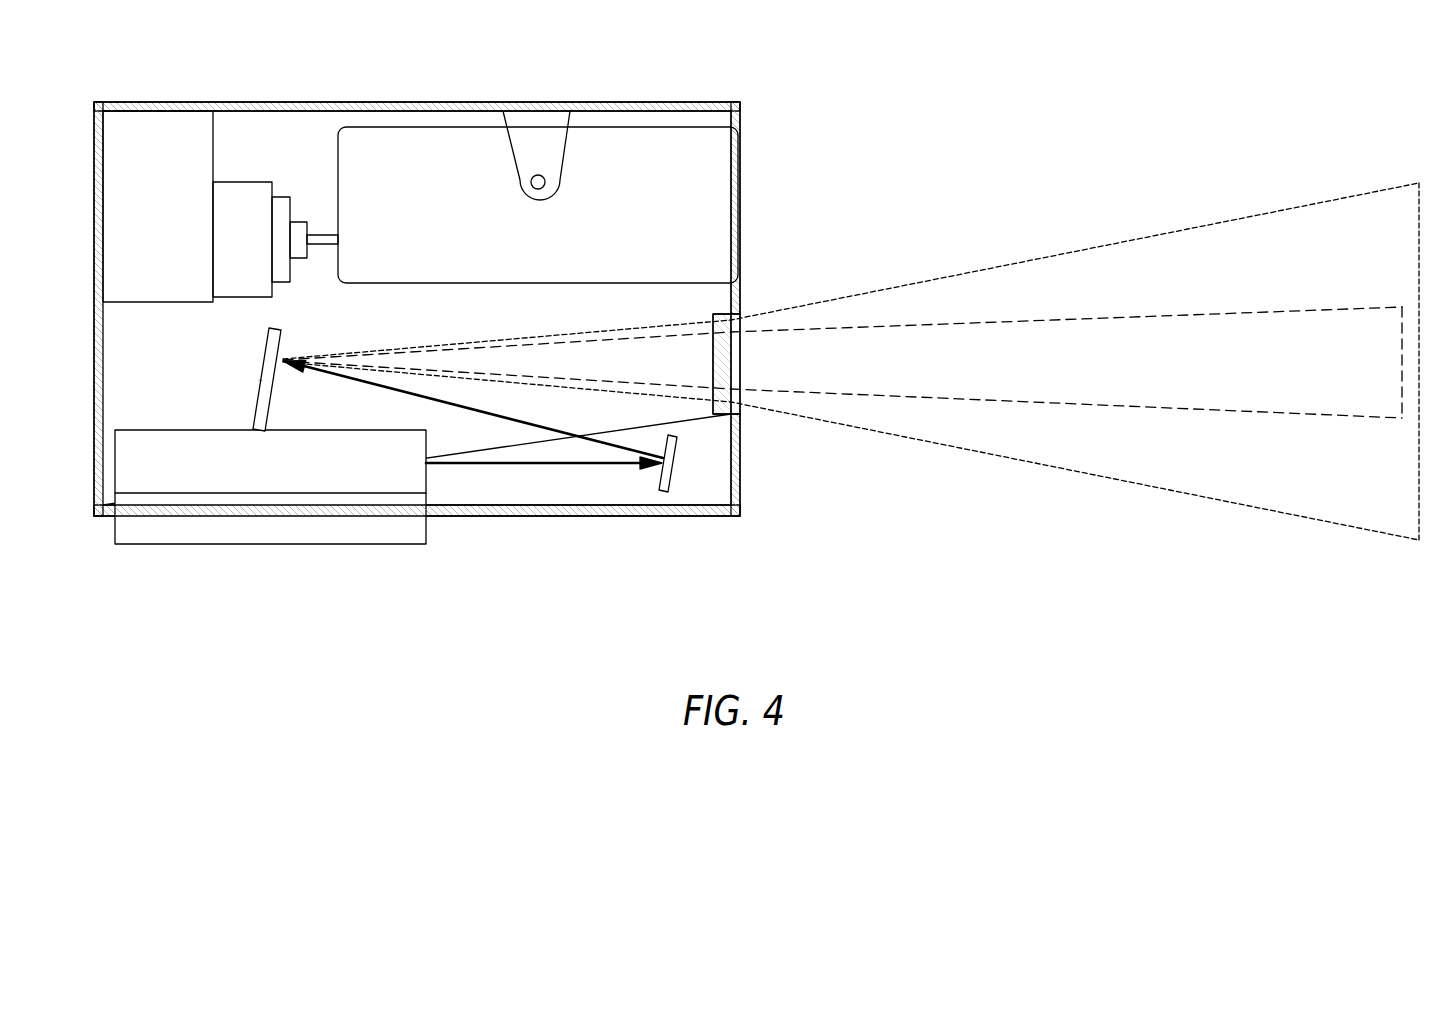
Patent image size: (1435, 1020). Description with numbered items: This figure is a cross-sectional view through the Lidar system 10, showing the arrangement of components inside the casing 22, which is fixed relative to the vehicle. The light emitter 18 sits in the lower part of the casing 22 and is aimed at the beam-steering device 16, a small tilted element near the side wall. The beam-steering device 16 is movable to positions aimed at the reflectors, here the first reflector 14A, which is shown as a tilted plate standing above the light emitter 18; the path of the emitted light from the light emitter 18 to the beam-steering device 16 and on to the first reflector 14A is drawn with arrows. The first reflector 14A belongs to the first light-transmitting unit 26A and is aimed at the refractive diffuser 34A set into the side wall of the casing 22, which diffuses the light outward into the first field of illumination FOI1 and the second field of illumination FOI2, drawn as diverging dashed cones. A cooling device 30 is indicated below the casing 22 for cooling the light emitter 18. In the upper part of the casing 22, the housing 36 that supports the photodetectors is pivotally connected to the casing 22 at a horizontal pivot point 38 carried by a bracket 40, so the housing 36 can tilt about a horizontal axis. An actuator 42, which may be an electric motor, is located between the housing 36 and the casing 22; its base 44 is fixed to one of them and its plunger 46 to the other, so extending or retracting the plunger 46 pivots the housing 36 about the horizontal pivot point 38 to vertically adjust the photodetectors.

The system 10 is at (835, 74).
The first reflector 14A is at (260, 382).
The beam-steering device 16 is at (673, 467).
The light emitter 18 is at (115, 478).
The casing 22 is at (560, 517).
The first light-transmitting unit 26A is at (235, 404).
The cooling device 30 is at (272, 576).
The refractive diffuser 34A is at (728, 350).
The housing 36 is at (410, 127).
The horizontal pivot point 38 is at (540, 174).
The bracket 40 is at (513, 167).
The actuator 42 is at (243, 168).
The base 44 is at (230, 298).
The plunger 46 is at (323, 245).
The first field of illumination FOI1 is at (1285, 415).
The second field of illumination FOI2 is at (1195, 228).